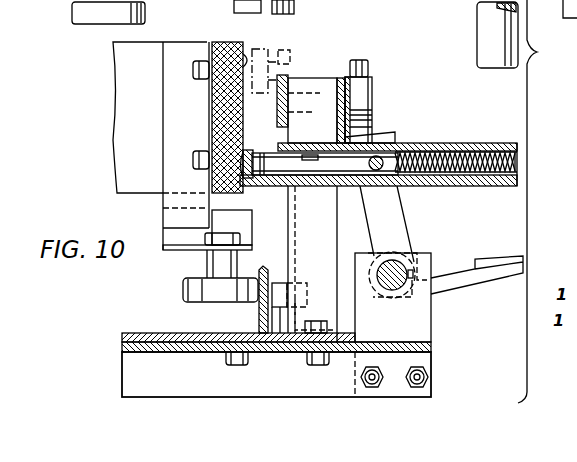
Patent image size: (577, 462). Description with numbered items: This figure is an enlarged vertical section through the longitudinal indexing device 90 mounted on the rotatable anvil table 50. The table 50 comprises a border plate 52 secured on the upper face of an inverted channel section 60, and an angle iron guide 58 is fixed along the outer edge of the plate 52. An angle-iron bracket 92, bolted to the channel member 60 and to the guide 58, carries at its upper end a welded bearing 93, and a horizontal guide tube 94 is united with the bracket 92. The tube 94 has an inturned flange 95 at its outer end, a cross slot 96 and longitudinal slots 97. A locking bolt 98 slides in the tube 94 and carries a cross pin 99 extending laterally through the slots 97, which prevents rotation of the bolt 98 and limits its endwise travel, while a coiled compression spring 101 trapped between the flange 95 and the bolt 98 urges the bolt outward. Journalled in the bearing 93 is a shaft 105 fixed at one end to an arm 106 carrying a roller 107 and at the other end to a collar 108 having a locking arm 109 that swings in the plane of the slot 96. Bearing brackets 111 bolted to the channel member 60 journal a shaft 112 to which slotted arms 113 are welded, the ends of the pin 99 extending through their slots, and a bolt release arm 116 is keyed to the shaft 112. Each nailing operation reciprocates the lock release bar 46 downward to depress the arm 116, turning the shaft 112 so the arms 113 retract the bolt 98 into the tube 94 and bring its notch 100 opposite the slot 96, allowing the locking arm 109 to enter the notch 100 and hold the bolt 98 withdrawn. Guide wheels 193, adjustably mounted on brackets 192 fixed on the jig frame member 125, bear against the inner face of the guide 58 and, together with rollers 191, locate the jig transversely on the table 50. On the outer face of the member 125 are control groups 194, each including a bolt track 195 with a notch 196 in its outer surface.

The rollers 191 is at (78, 16).
The lock release bar 46 is at (490, 43).
The longitudinal indexing device 90 is at (392, 43).
The brackets 192 is at (172, 215).
The jig frame member 125 is at (228, 42).
The control groups 194 is at (247, 140).
The notch 196 is at (243, 157).
The bolt track 195 is at (243, 186).
The guide wheels 193 is at (183, 291).
The angle iron guide 58 is at (262, 313).
The roller 107 is at (262, 50).
The arm 106 is at (286, 63).
The shaft 105 is at (306, 92).
The bearing 93 is at (325, 88).
The locking arm 109 is at (371, 63).
The collar 108 is at (373, 92).
The cross slot 96 is at (362, 137).
The horizontal guide tube 94 is at (419, 143).
The notch 100 is at (318, 157).
The locking bolt 98 is at (317, 170).
The coiled compression spring 101 is at (464, 143).
The inturned flange 95 is at (522, 142).
The longitudinal slots 97 is at (415, 170).
The cross pin 99 is at (378, 173).
The slotted arms 113 is at (398, 227).
The angle-iron bracket 92 is at (320, 238).
The shaft 112 is at (393, 289).
The bearing brackets 111 is at (424, 266).
The bolt release arm 116 is at (488, 281).
The border plate 52 is at (158, 333).
The rotatable anvil table 50 is at (120, 372).
The inverted channel section 60 is at (310, 389).